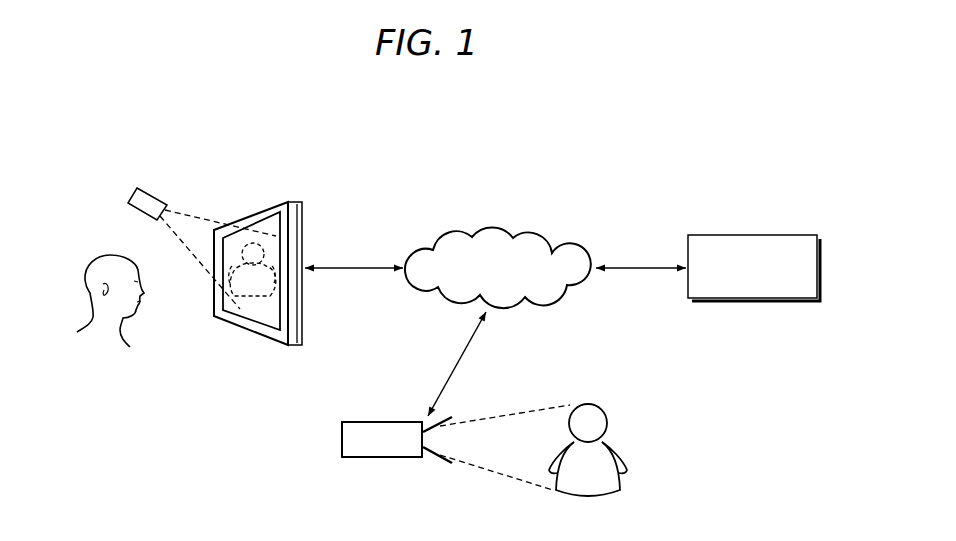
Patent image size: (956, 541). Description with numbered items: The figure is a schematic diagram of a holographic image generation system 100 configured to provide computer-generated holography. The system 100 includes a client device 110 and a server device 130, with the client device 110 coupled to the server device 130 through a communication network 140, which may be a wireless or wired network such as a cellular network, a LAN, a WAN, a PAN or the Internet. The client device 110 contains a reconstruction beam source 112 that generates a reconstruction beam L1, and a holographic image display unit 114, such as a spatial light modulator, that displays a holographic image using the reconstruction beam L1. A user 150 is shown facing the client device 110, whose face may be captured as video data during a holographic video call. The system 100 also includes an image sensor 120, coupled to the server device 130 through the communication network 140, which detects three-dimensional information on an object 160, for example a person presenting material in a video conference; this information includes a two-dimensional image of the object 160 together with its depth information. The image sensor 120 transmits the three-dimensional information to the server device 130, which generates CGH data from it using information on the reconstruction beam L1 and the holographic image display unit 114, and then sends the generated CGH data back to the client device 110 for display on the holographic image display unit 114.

The holographic image generation system 100 is at (773, 158).
The client device 110 is at (284, 279).
The reconstruction beam source 112 is at (131, 197).
The holographic image display unit 114 is at (258, 308).
The image sensor 120 is at (342, 439).
The server device 130 is at (783, 235).
The communication network 140 is at (538, 233).
The user 150 is at (89, 271).
The object 160 is at (608, 423).
The reconstruction beam L1 is at (187, 247).